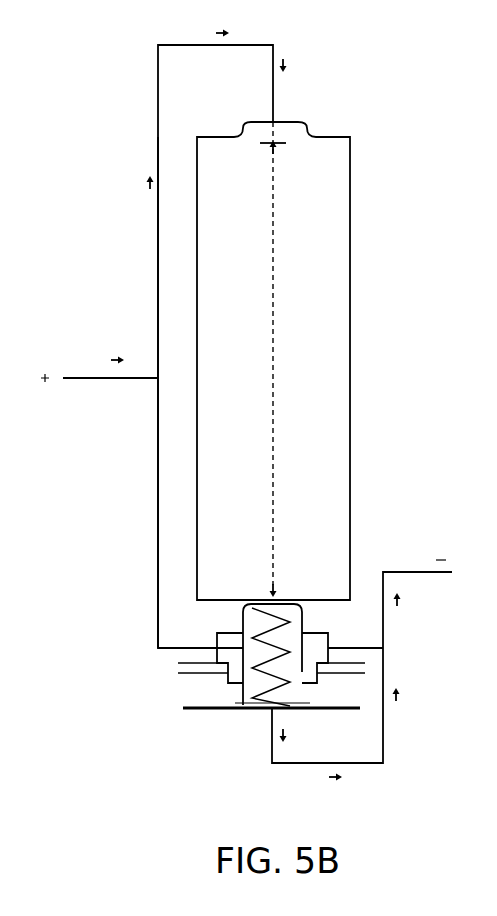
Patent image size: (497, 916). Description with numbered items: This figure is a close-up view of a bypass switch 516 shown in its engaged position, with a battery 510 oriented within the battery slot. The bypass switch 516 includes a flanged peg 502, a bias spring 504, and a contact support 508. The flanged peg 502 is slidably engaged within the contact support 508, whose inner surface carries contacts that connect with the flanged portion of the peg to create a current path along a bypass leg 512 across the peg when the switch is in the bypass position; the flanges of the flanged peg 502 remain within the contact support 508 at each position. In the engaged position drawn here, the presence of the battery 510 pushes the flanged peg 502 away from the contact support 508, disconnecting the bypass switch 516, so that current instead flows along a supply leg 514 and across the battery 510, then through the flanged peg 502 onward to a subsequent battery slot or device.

The flanged peg 502 is at (293, 601).
The bias spring 504 is at (268, 664).
The contact support 508 is at (324, 633).
The battery 510 is at (292, 345).
The bypass leg 512 is at (158, 483).
The supply leg 514 is at (158, 237).
The bypass switch 516 is at (215, 611).